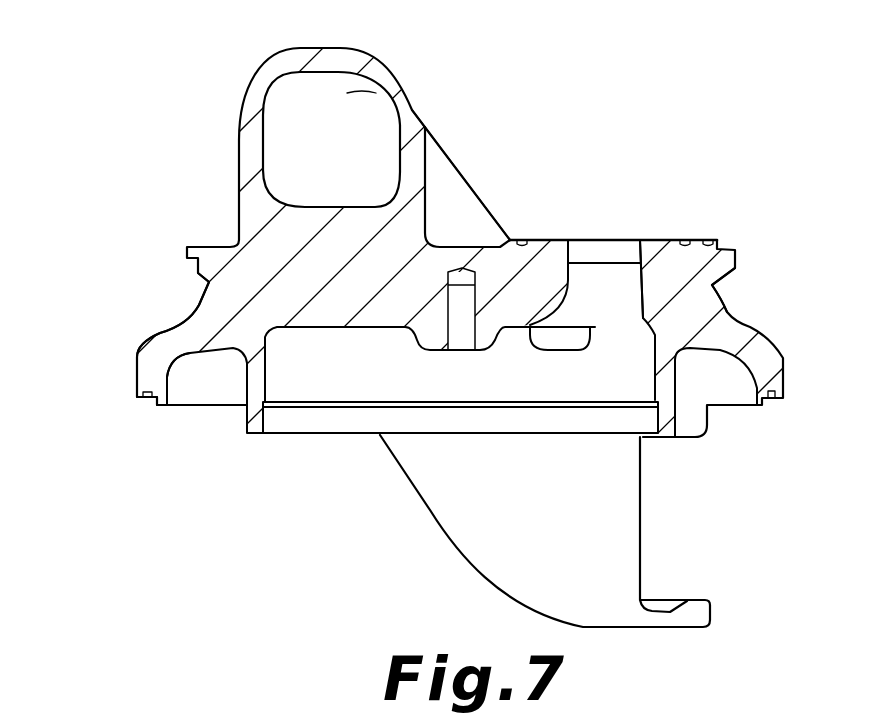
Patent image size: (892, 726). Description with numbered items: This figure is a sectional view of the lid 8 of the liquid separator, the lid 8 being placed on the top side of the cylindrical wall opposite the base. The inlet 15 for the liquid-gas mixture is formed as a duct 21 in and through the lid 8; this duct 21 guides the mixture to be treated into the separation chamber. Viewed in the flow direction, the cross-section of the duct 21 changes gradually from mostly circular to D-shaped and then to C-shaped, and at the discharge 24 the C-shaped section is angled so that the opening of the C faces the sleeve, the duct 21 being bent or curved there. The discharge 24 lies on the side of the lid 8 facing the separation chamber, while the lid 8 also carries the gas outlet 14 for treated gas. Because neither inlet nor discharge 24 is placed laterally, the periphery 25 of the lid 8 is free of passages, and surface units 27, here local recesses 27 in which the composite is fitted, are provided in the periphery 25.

The lid 8 is at (150, 85).
The inlet 15 is at (303, 117).
The duct 21 is at (442, 182).
The gas outlet 14 is at (596, 293).
The surface units (local recesses) 27 is at (712, 285).
The periphery of the lid 25 is at (173, 353).
The discharge 24 is at (650, 595).